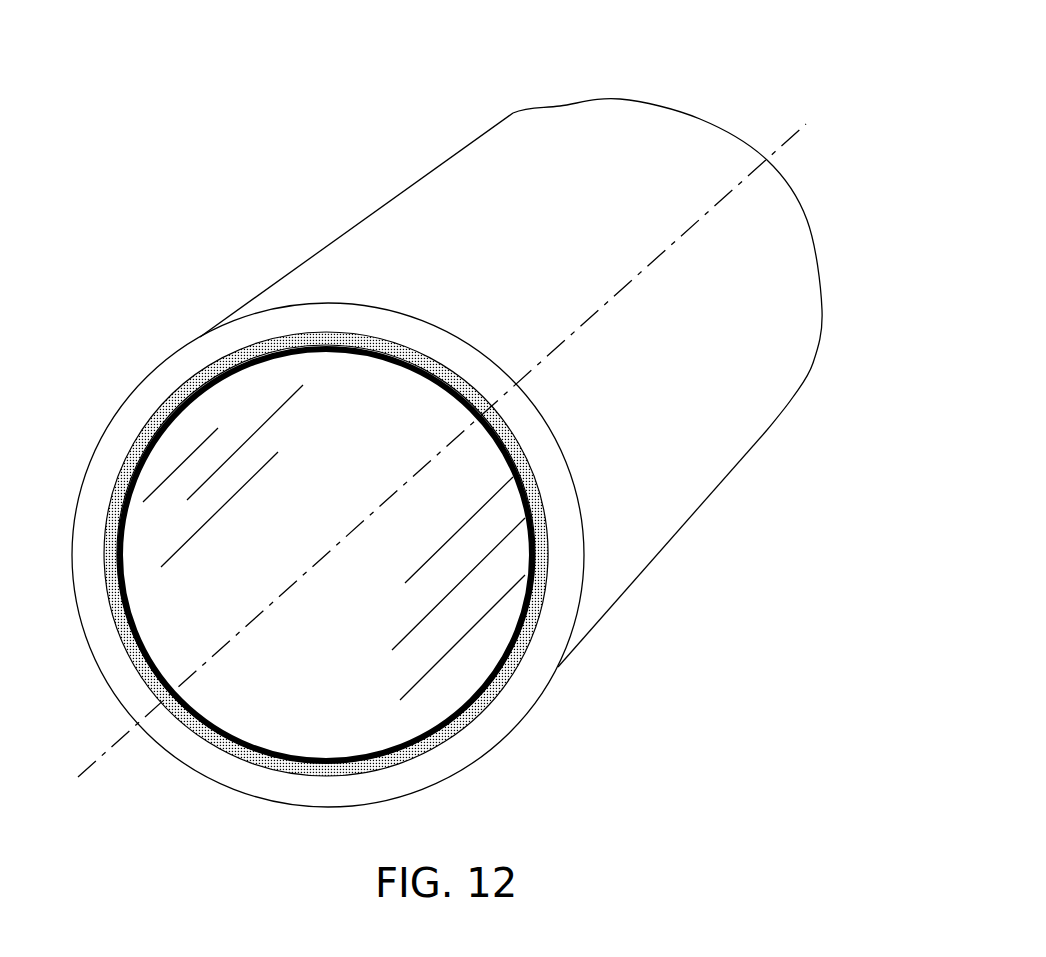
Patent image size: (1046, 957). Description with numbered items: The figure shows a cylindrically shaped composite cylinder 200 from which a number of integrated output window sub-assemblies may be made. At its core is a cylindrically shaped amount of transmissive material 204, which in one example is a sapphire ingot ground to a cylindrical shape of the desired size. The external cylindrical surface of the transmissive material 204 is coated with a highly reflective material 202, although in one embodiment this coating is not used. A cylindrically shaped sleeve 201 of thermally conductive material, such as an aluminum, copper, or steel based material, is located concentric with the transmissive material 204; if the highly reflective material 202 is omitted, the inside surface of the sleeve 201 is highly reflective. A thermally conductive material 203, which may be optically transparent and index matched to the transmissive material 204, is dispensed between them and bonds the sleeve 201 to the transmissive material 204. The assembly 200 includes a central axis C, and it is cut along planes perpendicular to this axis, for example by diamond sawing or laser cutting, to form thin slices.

The composite cylinder 200 is at (860, 90).
The cylindrically shaped sleeve 201 is at (103, 462).
The highly reflective material 202 is at (207, 377).
The thermally conductive material 203 is at (157, 413).
The transmissive material 204 is at (340, 646).
The central axis C is at (93, 762).